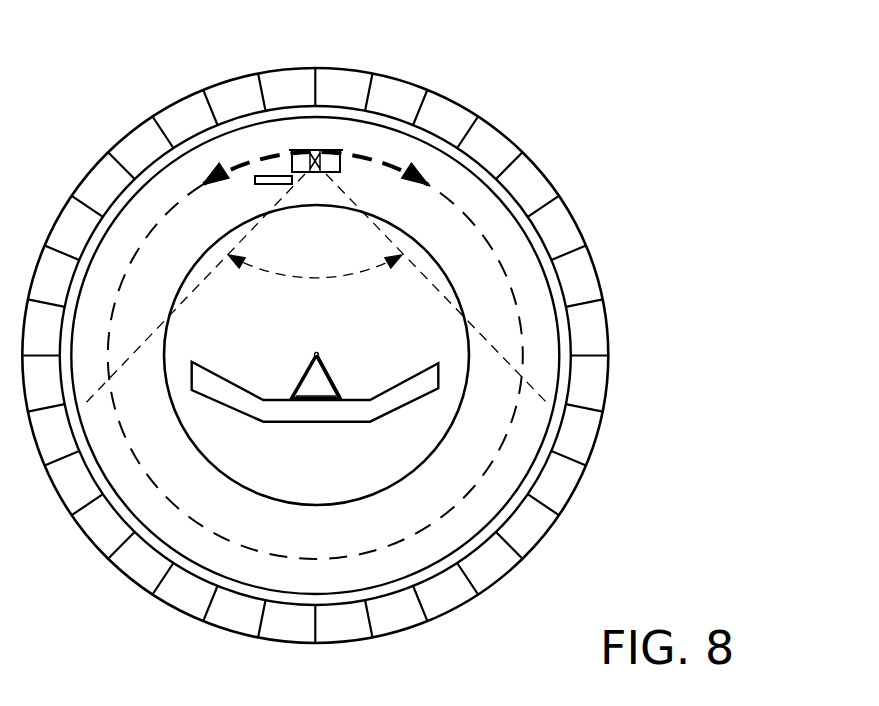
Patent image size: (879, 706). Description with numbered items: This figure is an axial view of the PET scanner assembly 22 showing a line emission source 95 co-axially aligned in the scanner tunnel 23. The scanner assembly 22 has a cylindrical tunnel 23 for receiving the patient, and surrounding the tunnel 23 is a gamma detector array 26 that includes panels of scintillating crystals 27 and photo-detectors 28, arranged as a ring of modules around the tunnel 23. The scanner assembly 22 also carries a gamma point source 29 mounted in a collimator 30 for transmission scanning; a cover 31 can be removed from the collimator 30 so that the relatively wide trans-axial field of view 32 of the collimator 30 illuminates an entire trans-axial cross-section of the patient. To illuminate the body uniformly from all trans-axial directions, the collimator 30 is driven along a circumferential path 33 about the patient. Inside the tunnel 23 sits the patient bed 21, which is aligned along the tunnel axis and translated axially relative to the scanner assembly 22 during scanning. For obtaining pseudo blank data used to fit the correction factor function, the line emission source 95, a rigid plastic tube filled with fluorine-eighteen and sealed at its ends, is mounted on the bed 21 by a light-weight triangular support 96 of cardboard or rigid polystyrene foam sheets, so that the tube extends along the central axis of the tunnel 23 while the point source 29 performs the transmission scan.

The scanner assembly 22 is at (372, 55).
The gamma detector array 26 is at (502, 128).
The scintillating crystals 27 is at (563, 337).
The photo-detectors 28 is at (592, 345).
The gamma point source 29 is at (306, 151).
The collimator 30 is at (322, 172).
The cover 31 is at (277, 184).
The field of view 32 is at (340, 275).
The circumferential path 33 is at (488, 237).
The bed 21 is at (298, 423).
The tunnel 23 is at (360, 498).
The line emission source 95 is at (315, 352).
The triangular support 96 is at (331, 377).